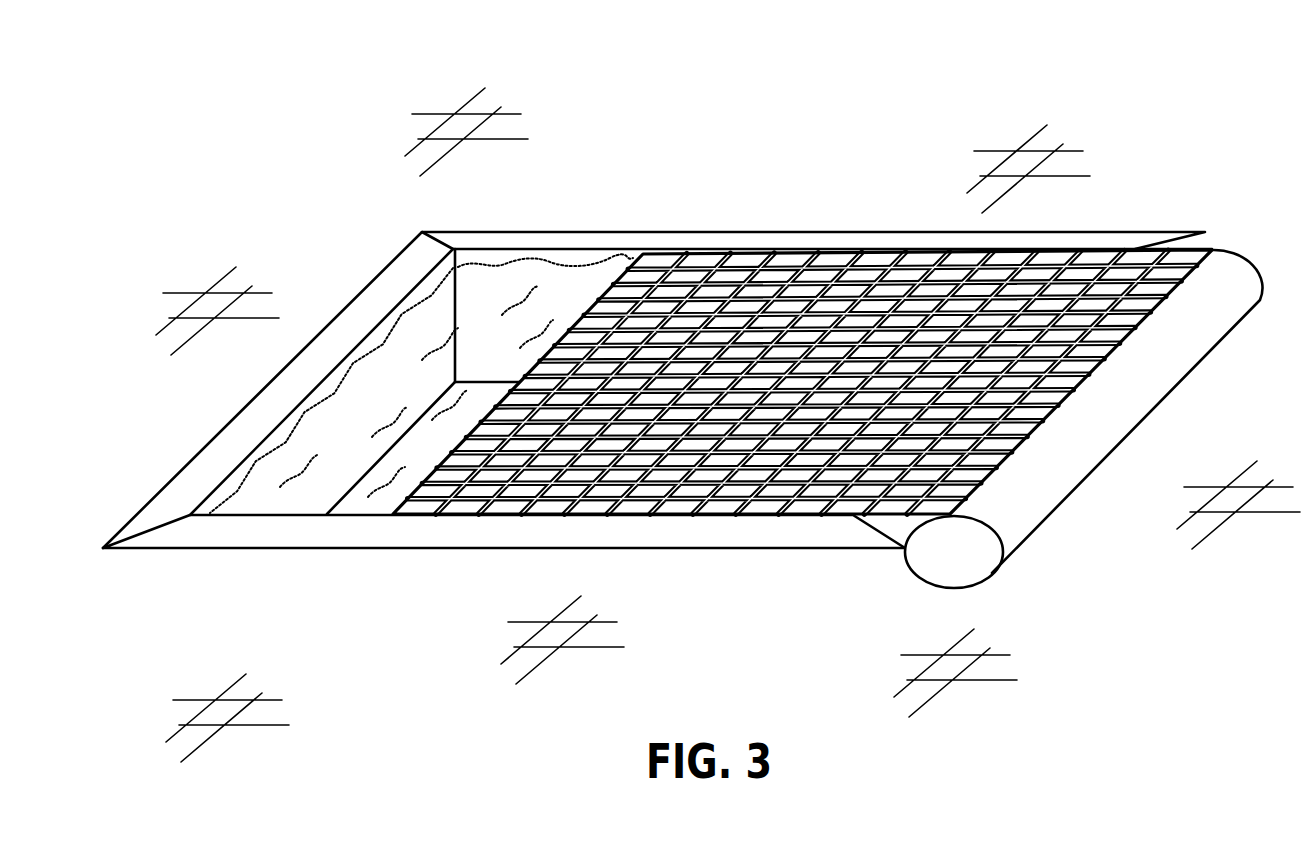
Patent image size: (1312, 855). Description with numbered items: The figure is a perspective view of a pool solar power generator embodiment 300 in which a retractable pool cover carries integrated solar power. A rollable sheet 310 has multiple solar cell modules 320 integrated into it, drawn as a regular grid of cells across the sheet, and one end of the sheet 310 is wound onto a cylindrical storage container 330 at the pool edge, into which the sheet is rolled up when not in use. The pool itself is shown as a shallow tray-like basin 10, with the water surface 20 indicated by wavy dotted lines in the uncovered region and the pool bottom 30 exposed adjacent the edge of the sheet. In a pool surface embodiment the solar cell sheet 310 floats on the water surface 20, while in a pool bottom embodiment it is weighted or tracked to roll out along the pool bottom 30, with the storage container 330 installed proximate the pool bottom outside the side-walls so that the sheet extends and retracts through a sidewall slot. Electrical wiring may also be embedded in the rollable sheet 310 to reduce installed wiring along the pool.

The pool solar power generator embodiment 300 is at (695, 83).
The frame 10 is at (463, 238).
The water surface 20 is at (258, 492).
The pool bottom 30 is at (378, 504).
The rollable sheet 310 is at (647, 257).
The solar cell modules 320 is at (743, 260).
The storage container 330 is at (1220, 263).